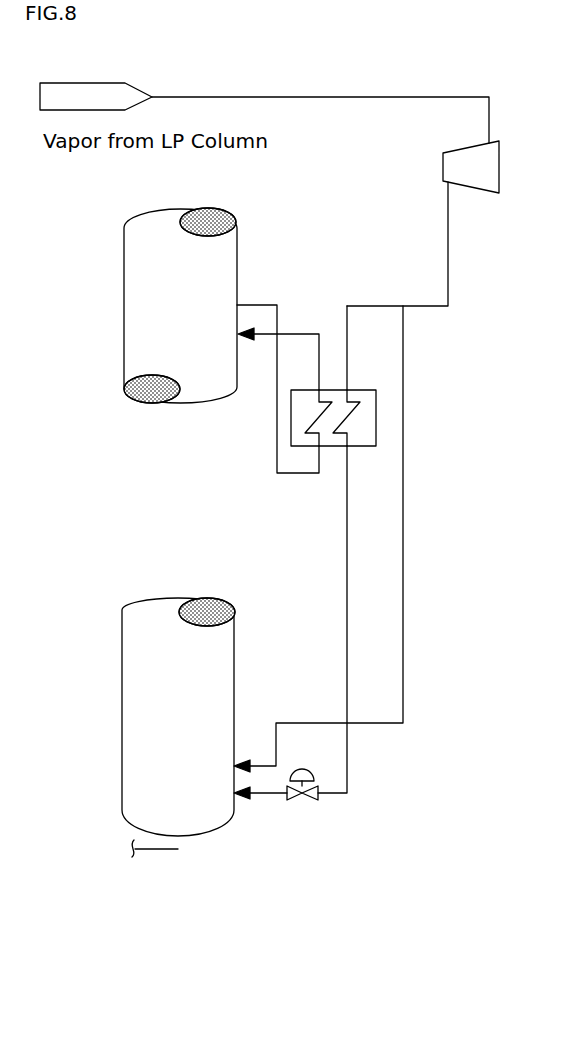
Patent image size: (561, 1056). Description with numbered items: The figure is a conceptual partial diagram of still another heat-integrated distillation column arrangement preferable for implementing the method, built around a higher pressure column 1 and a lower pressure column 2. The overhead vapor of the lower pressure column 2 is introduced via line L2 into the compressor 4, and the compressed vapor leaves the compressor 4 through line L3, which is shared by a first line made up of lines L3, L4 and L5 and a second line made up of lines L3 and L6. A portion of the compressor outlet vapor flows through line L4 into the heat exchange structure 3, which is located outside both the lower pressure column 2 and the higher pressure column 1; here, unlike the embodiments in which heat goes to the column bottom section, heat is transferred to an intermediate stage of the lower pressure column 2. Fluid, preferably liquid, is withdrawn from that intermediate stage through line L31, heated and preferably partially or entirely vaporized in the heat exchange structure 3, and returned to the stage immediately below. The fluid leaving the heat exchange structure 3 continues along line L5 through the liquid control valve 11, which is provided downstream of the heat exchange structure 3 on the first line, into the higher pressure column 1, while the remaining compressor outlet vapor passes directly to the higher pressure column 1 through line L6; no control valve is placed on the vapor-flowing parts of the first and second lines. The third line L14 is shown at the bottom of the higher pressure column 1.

The higher pressure column 1 is at (182, 761).
The lower pressure column 2 is at (184, 341).
The heat exchange structure 3 is at (333, 448).
The compressor 4 is at (480, 179).
The control valve 11 is at (300, 803).
The line L2 is at (291, 88).
The line L3 is at (455, 259).
The line L4 is at (376, 303).
The line L5 is at (341, 620).
The line L6 is at (407, 366).
The line L31 is at (268, 467).
The third line L14 is at (155, 858).